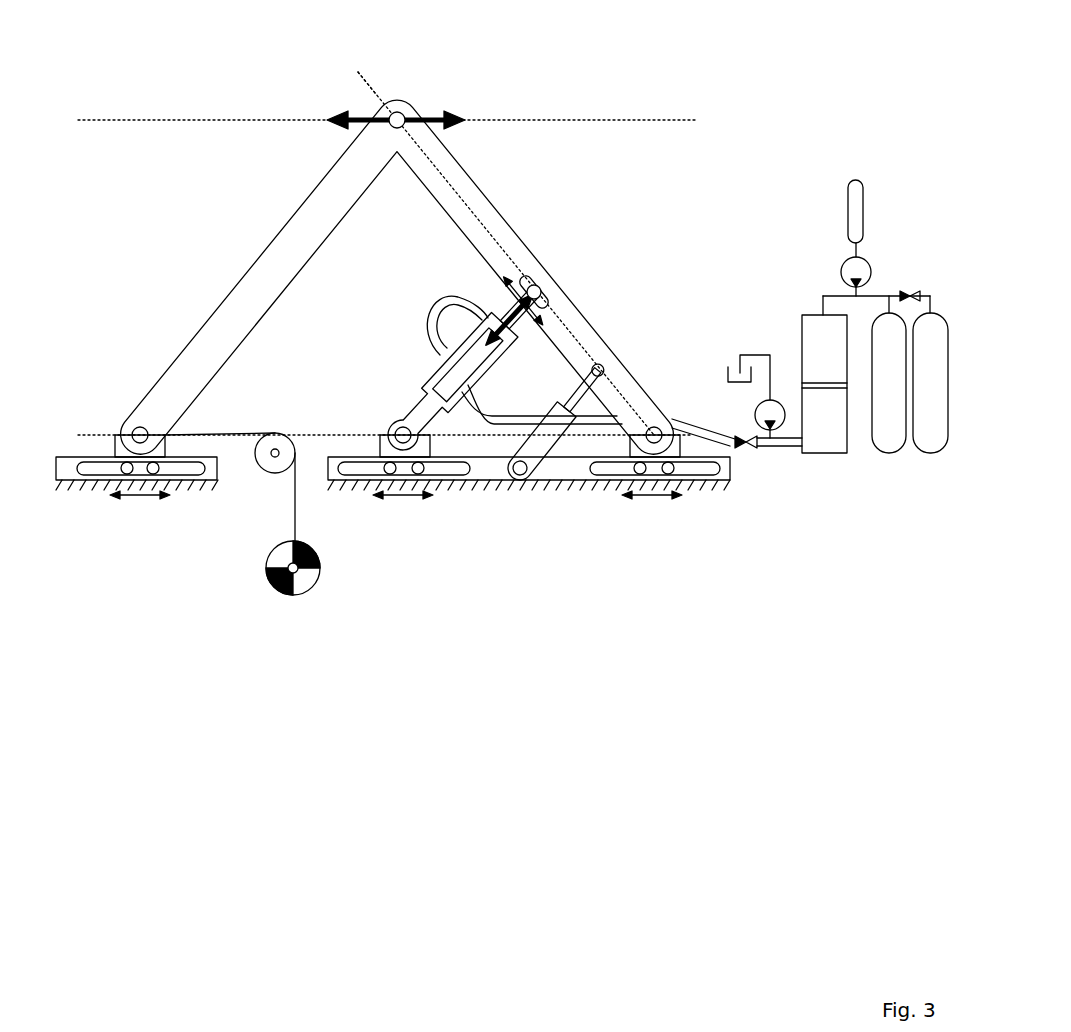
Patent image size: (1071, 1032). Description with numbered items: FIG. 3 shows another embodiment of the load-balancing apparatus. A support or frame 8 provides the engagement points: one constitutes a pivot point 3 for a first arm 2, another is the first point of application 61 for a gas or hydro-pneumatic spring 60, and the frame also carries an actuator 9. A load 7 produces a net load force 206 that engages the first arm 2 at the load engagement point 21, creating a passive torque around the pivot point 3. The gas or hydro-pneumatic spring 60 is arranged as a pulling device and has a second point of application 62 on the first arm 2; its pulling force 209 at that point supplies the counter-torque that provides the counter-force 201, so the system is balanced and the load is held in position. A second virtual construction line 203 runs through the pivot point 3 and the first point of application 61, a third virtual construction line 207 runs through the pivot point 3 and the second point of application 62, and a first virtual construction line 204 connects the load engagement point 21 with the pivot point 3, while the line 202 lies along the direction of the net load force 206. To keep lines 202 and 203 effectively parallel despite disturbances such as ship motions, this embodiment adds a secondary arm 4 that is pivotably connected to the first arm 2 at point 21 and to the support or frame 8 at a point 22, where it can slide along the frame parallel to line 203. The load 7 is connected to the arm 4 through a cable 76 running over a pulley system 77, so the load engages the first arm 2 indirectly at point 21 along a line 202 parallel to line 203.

The first arm 2 is at (625, 410).
The pivot point 3 is at (655, 445).
The secondary arm 4 is at (315, 210).
The load 7 is at (277, 587).
The support or frame 8 is at (203, 477).
The actuator 9 is at (518, 472).
The load engagement point 21 is at (401, 116).
The point 22 is at (140, 438).
The gas or hydro-pneumatic spring 60 is at (430, 372).
The first point of application 61 is at (405, 440).
The second point of application 62 is at (545, 272).
The cable 76 is at (257, 435).
The pulley system 77 is at (278, 468).
The counter-force 201 is at (336, 112).
The line along the direction of the net load force 202 is at (218, 120).
The second virtual construction line 203 is at (102, 437).
The first virtual construction line 204 is at (202, 47).
The net load force 206 is at (428, 118).
The third virtual construction line 207 is at (358, 75).
The pulling force 209 is at (518, 298).